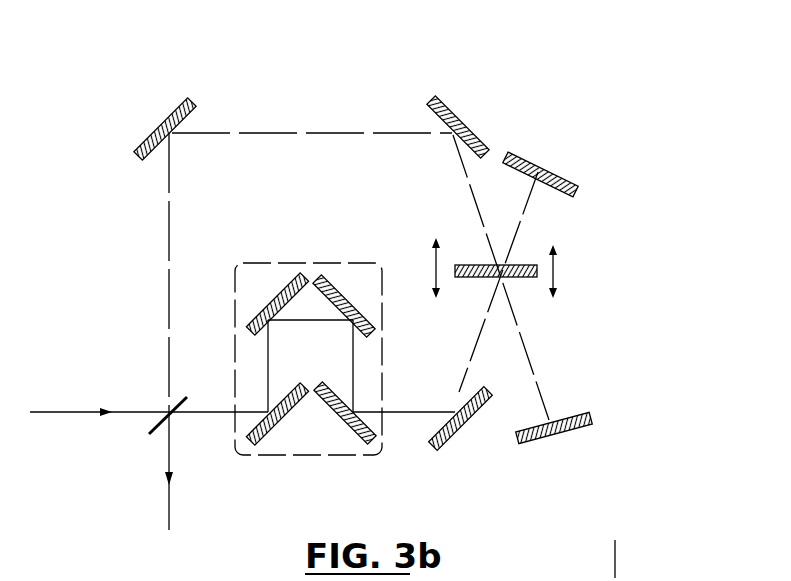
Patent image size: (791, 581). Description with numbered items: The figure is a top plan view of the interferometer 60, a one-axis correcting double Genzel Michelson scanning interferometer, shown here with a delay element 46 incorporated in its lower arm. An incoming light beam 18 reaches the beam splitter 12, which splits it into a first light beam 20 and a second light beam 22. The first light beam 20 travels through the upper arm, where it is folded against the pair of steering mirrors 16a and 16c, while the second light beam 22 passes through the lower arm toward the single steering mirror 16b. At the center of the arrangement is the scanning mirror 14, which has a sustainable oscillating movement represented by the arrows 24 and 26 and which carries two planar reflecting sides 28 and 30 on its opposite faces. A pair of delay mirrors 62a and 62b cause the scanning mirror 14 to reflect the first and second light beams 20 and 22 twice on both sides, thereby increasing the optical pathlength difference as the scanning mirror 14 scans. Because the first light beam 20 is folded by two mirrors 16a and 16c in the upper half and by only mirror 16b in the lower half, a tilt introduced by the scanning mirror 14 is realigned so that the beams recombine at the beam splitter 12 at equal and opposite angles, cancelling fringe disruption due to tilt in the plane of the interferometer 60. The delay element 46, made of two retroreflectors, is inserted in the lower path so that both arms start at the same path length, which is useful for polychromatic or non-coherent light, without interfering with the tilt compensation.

The interferometer 60 is at (344, 76).
The first light beam 20 is at (169, 183).
The light beam 18 is at (68, 413).
The second light beam 22 is at (202, 415).
The beam splitter 12 is at (149, 437).
The steering mirror 16a is at (160, 126).
The steering mirror 16b is at (442, 446).
The steering mirror 16c is at (446, 107).
The delay mirror 62a is at (538, 172).
The delay mirror 62b is at (582, 424).
The reflecting side 28 is at (466, 262).
The reflecting side 30 is at (472, 280).
The scanning mirror 14 is at (518, 263).
The arrow 26 is at (435, 270).
The arrow 24 is at (556, 277).
The delay element 46 is at (320, 457).